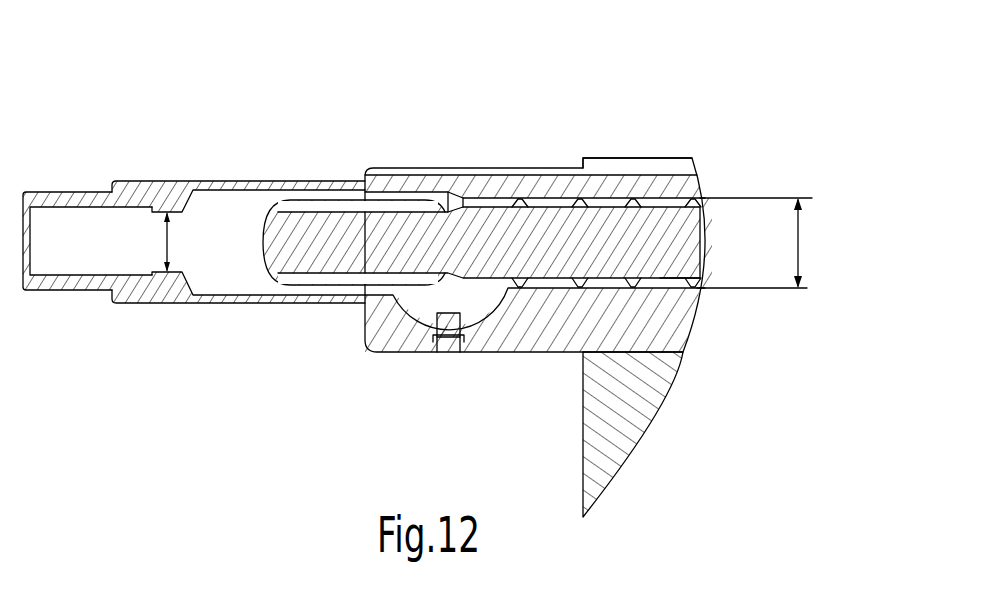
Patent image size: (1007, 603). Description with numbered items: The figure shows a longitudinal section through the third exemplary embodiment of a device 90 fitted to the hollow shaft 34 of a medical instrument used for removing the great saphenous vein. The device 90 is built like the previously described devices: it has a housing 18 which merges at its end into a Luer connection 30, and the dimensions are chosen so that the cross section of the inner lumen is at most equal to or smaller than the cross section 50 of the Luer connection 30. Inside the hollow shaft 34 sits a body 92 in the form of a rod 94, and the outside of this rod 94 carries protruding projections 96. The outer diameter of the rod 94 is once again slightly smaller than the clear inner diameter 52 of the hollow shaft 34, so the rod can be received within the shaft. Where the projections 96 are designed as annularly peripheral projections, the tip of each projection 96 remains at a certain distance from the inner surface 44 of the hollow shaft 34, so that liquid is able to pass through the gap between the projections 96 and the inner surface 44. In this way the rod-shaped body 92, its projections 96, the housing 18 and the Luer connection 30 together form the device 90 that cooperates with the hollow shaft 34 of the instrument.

The housing 18 is at (290, 188).
The Luer connection 30 is at (80, 190).
The hollow shaft 34 is at (463, 168).
The inner surface 44 is at (695, 178).
The cross section 50 is at (167, 238).
The clear inner diameter 52 is at (800, 235).
The device 90 is at (498, 196).
The body 92 is at (610, 230).
The rod 94 is at (688, 257).
The projections 96 is at (573, 205).